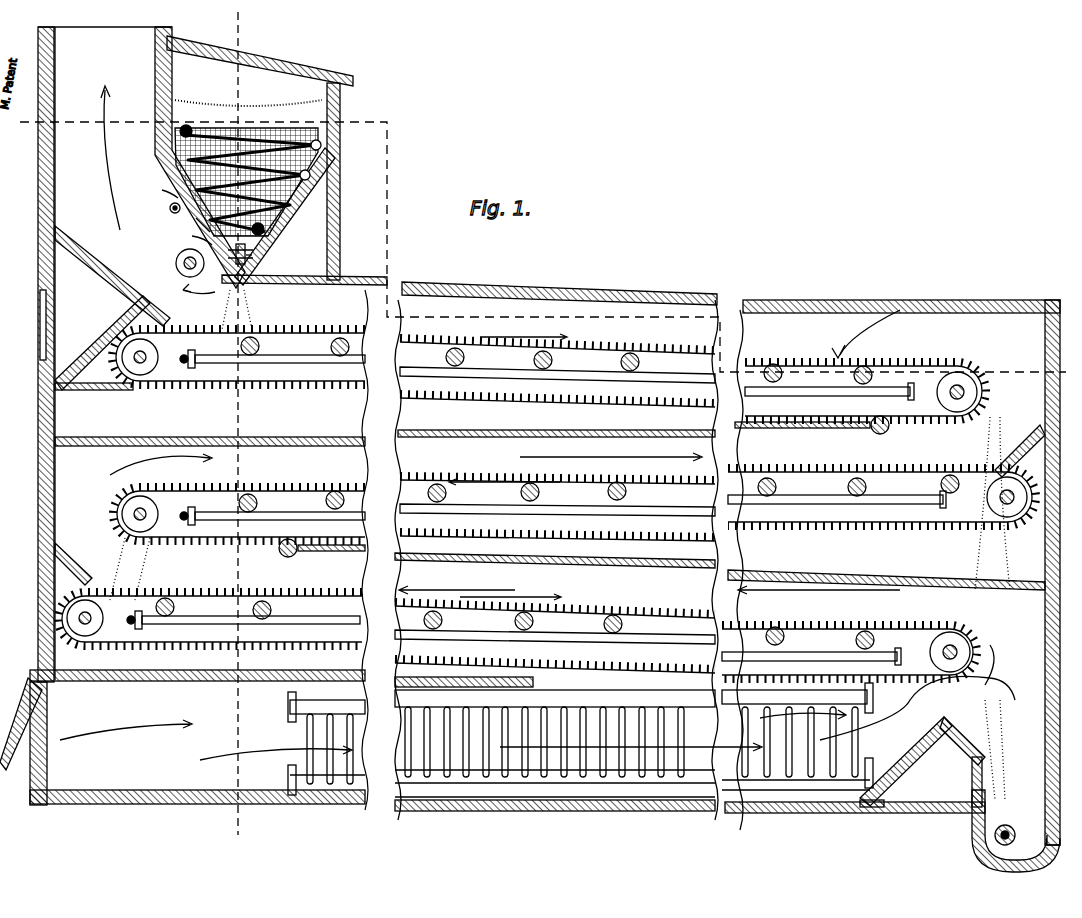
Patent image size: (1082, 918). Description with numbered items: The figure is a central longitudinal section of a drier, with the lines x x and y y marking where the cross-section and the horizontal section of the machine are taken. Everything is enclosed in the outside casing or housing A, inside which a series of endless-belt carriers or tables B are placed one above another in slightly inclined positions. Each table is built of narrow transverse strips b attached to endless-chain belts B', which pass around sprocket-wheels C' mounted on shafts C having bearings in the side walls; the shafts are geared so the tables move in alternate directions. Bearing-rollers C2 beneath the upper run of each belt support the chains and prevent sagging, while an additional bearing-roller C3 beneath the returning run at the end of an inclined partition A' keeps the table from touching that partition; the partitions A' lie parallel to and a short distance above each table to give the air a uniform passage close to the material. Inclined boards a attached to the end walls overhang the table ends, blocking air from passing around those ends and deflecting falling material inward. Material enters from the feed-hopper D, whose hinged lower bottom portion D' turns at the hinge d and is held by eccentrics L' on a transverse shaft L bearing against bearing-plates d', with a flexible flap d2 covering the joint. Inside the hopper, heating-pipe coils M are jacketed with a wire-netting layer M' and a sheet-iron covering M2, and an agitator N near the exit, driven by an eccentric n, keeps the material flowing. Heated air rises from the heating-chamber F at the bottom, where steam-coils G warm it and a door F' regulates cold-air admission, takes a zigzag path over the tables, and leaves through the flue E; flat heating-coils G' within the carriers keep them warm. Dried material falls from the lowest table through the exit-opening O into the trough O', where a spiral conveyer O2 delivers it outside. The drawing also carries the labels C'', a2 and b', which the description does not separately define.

The housing A is at (553, 449).
The inclined partitions A' is at (537, 547).
The endless-belt carriers B is at (524, 462).
The endless-chain belts B' is at (533, 492).
The shafts C is at (547, 521).
The sprocket-wheels C' is at (549, 504).
The belt drum C'' is at (998, 655).
The bearing-rollers C2 is at (885, 641).
The additional bearing-roller C3 is at (295, 556).
The feed-hopper D is at (271, 157).
The hinged lower portion of hopper bottom D' is at (181, 227).
The hinge d is at (160, 211).
The bearing-plates d' is at (186, 241).
The flexible flap d2 is at (159, 187).
The flue E is at (87, 353).
The heating-chamber F is at (21, 724).
The door F' is at (206, 740).
The steam-coils G is at (580, 737).
The flat heating-coils G' is at (536, 504).
The transverse shaft L is at (178, 264).
The eccentrics L' is at (199, 291).
The heating-pipe coils M is at (246, 166).
The wire-netting layer M' is at (333, 183).
The sheet-iron covering M2 is at (320, 145).
The agitator N is at (248, 262).
The eccentric n is at (261, 265).
The exit-opening O is at (566, 548).
The trough O' is at (1059, 861).
The spiral conveyer O2 is at (1015, 835).
The inclined board a is at (1066, 648).
The openings a2 is at (55, 312).
The transverse strips b is at (590, 508).
The apron slats b' is at (288, 472).
The section line x x is at (248, 428).
The section line y y is at (544, 258).